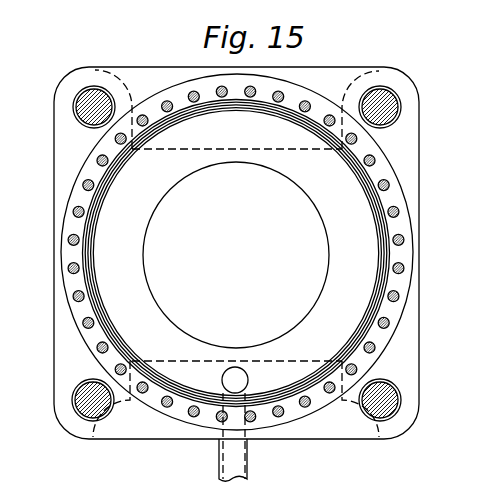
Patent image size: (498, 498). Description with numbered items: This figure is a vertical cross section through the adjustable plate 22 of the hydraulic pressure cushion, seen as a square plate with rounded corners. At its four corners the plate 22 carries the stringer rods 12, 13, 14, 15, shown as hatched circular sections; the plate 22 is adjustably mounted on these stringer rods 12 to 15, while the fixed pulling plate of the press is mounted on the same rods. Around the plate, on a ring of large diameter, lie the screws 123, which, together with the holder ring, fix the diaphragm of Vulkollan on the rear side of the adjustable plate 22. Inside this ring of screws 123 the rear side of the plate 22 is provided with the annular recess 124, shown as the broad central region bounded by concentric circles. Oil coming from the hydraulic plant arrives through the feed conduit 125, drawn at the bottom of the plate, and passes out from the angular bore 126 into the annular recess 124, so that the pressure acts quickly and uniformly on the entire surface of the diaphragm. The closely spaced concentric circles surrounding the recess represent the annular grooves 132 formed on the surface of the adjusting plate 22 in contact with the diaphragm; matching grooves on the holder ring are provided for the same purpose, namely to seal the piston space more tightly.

The stringer rod 12 is at (84, 103).
The stringer rod 13 is at (393, 108).
The stringer rod 14 is at (80, 394).
The stringer rod 15 is at (395, 400).
The adjustable plate 22 is at (57, 165).
The screws 123 is at (398, 270).
The annular recess 124 is at (113, 250).
The feed conduit 125 is at (247, 465).
The angular bore 126 is at (232, 383).
The annular grooves 132 is at (372, 315).